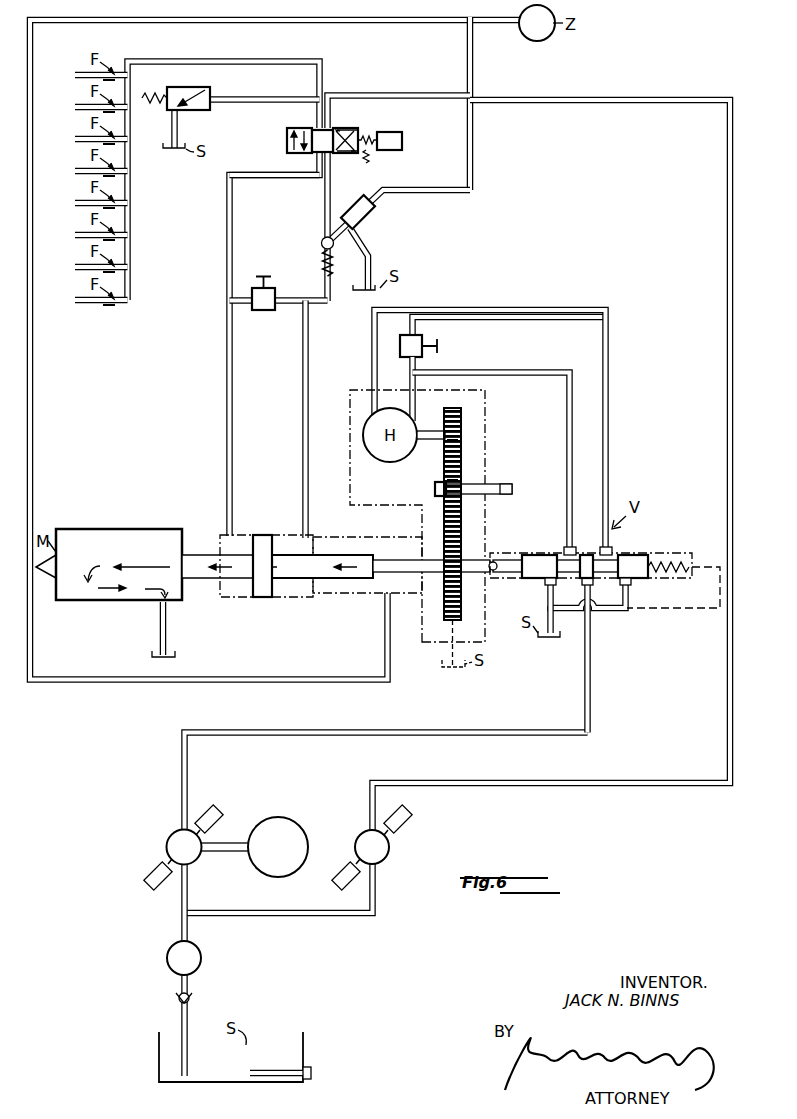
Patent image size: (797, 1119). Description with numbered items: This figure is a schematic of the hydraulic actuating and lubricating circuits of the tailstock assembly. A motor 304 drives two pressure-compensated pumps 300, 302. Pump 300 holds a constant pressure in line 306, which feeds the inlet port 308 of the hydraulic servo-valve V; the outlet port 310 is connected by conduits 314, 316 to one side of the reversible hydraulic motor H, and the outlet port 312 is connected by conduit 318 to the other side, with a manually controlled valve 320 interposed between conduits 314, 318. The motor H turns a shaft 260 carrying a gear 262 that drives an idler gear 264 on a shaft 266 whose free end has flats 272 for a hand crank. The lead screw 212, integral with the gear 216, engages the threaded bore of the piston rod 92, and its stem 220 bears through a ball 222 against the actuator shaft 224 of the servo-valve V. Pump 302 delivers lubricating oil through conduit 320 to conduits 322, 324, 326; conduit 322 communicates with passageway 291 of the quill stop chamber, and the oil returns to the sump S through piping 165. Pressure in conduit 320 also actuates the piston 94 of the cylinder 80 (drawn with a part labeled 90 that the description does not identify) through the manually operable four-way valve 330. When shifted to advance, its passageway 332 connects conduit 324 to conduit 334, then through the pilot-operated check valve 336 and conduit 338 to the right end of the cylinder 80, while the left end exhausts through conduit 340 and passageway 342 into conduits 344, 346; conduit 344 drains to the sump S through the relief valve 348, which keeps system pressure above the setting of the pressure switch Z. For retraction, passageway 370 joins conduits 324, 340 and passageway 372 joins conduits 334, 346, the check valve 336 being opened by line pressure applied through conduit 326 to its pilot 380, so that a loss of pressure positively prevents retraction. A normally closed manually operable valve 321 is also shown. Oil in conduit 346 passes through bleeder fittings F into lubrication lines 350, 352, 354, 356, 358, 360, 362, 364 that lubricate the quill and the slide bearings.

The conduit 322 is at (272, 20).
The conduit 320 is at (612, 100).
The conduit 326 is at (473, 152).
The conduit 324 is at (390, 91).
The conduit 346 is at (322, 64).
The conduit 344 is at (257, 84).
The relief valve 348 is at (196, 96).
The lubrication line 350 is at (82, 74).
The lubrication line 352 is at (82, 138).
The lubrication line 354 is at (82, 106).
The lubrication line 356 is at (82, 170).
The lubrication line 358 is at (82, 202).
The lubrication line 360 is at (82, 234).
The lubrication line 362 is at (82, 266).
The lubrication line 364 is at (82, 299).
The directional four-way valve 330 is at (283, 138).
The passageway 332 is at (298, 128).
The passageway 342 is at (289, 146).
The passageway 370 is at (345, 128).
The passageway 372 is at (344, 155).
The pilot operating device 380 is at (368, 212).
The pilot operated check valve 336 is at (320, 248).
The conduit 340 is at (232, 197).
The conduit 334 is at (275, 198).
The manually operable valve 321 is at (279, 308).
The conduit 338 is at (310, 313).
The conduit 318 is at (523, 311).
The conduit 316 is at (411, 381).
The conduit 314 is at (489, 372).
The shaft 260 is at (428, 432).
The gear 262 is at (461, 428).
The idler gear 264 is at (461, 470).
The shaft 266 is at (492, 485).
The flats 272 is at (513, 488).
The stem 220 is at (492, 558).
The ball 222 is at (497, 560).
The actuator shaft 224 is at (511, 565).
The outlet port 310 is at (573, 545).
The outlet port 312 is at (612, 552).
The inlet port 308 is at (589, 585).
The cylinder 80 is at (244, 540).
The piston rod 90 is at (199, 561).
The piston 94 is at (264, 598).
The piston rod 92 is at (328, 578).
The passageway 291 is at (382, 584).
The lead screw 212 is at (389, 560).
The gear 216 is at (447, 622).
The piping 165 is at (160, 625).
The pump 300 is at (172, 843).
The pump 302 is at (383, 847).
The motor 304 is at (280, 828).
The line 306 is at (345, 735).